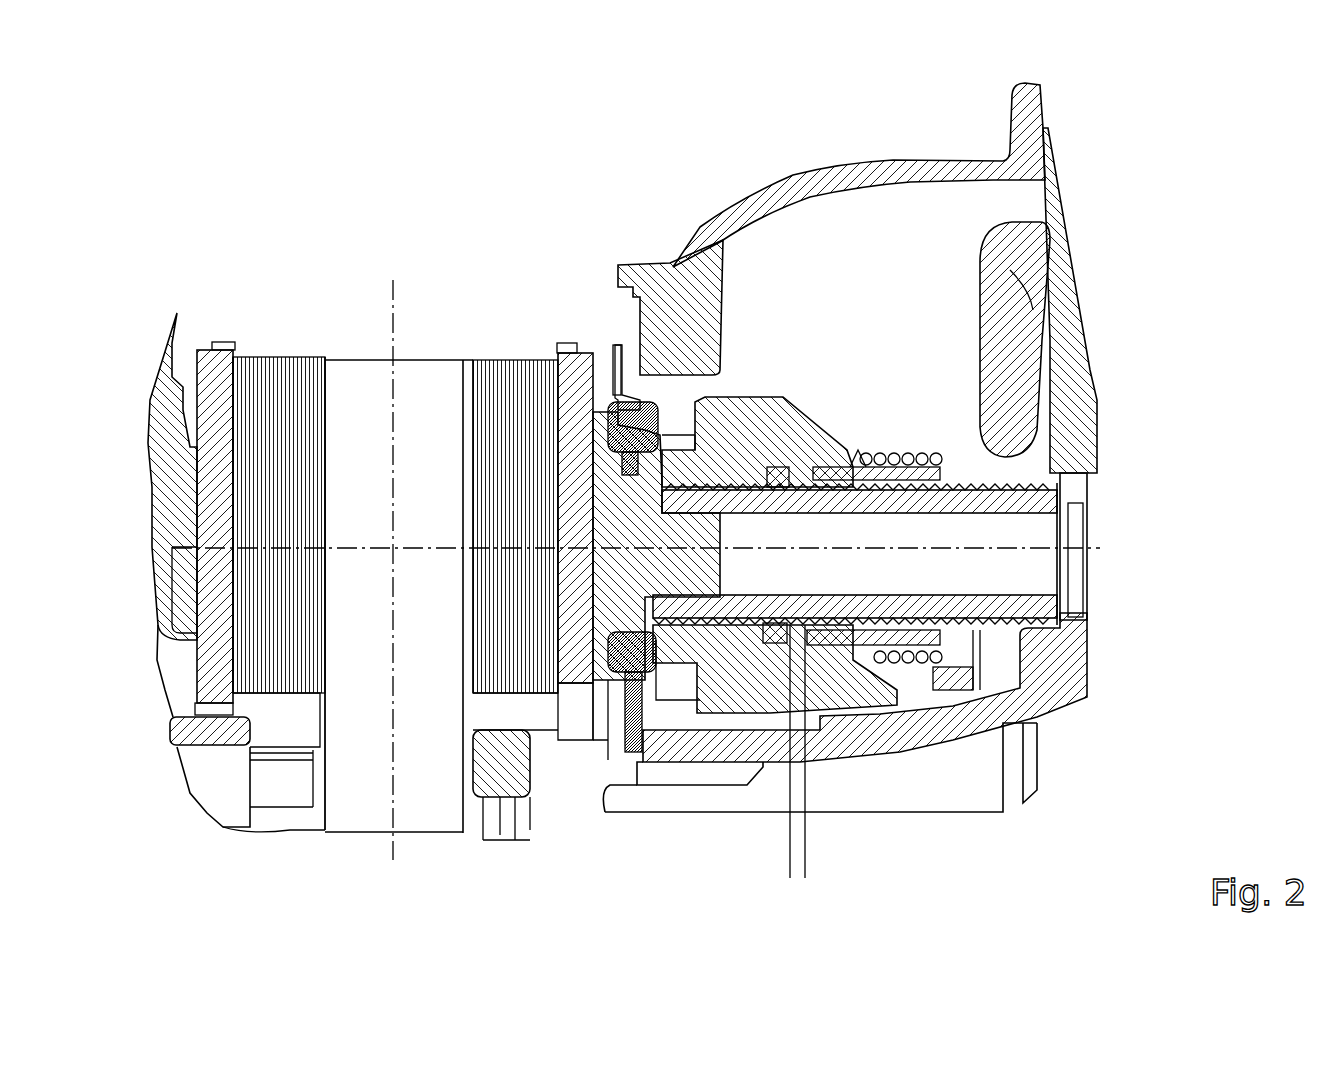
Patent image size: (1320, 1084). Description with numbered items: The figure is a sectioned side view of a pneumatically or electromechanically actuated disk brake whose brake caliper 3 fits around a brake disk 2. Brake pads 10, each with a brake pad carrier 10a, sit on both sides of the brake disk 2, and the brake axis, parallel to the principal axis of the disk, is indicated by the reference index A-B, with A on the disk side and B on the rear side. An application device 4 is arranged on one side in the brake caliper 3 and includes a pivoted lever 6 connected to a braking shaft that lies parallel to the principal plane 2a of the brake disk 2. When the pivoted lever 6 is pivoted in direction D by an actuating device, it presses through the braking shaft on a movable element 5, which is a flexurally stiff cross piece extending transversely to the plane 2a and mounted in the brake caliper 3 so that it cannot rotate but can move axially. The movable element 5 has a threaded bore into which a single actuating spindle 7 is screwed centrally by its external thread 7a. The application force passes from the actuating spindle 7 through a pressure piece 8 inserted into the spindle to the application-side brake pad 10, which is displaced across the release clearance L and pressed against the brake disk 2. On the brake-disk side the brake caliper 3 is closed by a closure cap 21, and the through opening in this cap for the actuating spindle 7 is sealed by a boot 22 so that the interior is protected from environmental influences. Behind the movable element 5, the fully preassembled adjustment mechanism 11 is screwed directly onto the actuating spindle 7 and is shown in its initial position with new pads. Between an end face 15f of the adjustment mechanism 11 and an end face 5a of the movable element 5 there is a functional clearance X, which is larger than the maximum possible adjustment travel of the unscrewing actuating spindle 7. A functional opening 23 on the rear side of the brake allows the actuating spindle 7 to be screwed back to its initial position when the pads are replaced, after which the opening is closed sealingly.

The brake disk 2 is at (350, 395).
The principal plane of the brake disk 2a is at (392, 335).
The release clearance L is at (468, 357).
The brake pad 10 is at (500, 357).
The brake pad carrier 10a is at (578, 360).
The pressure piece 8 is at (616, 580).
The brake caliper 3 is at (676, 268).
The application device 4 is at (834, 310).
The pivoting direction D is at (987, 250).
The pivoted lever 6 is at (1000, 270).
The adjustment mechanism 11 is at (907, 438).
The functional opening 23 is at (1073, 532).
The movable element 5 is at (731, 417).
The actuating spindle 7 is at (740, 600).
The external thread 7a is at (1000, 486).
The boot 22 is at (625, 655).
The closure cap 21 is at (638, 690).
The end face of the movable element 5a is at (787, 827).
The end face of the adjustment mechanism 15f is at (807, 827).
The functional clearance X is at (797, 878).
The brake axis end point A is at (172, 548).
The brake axis end point B is at (1093, 560).